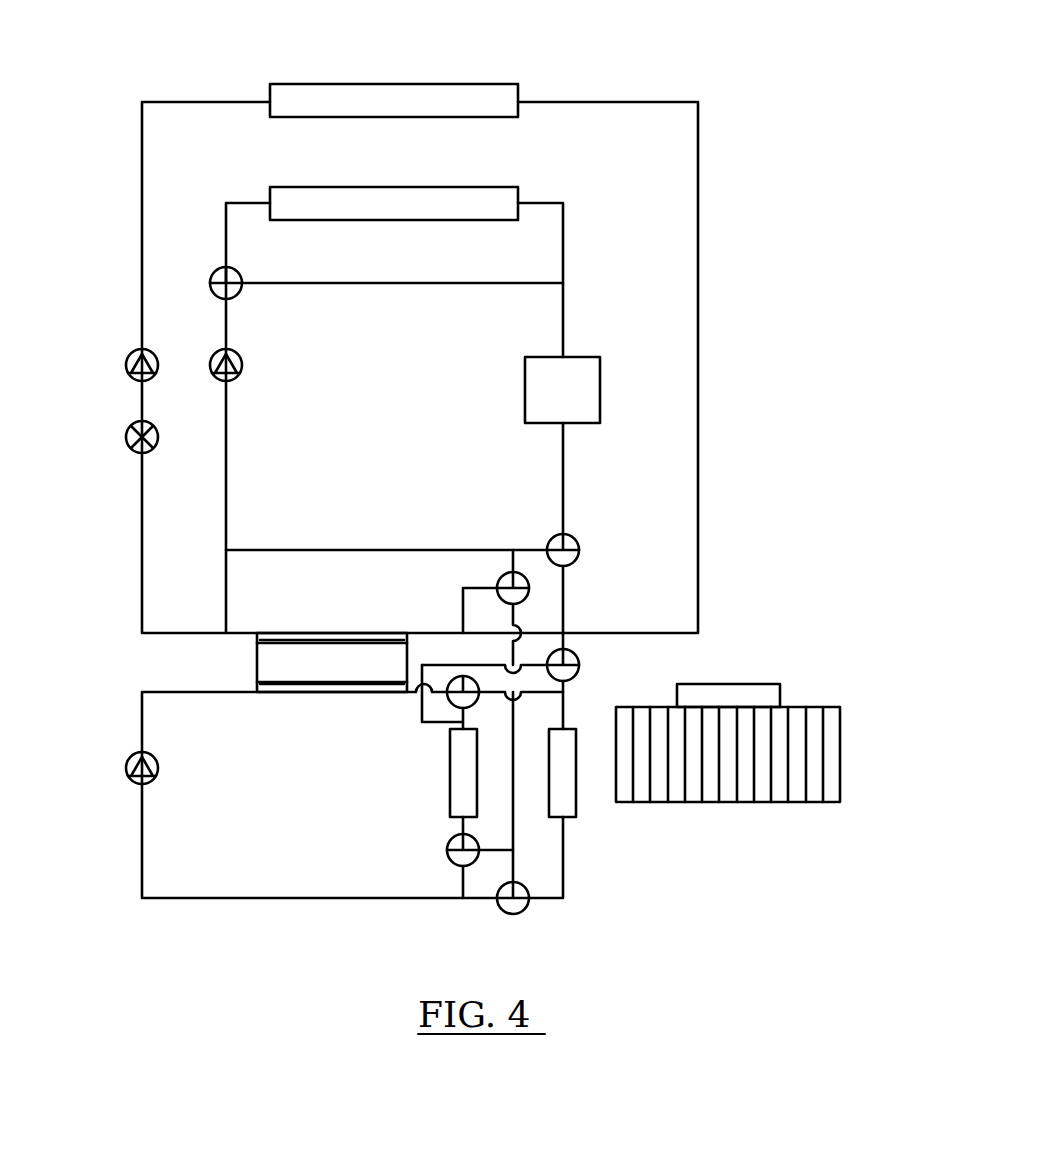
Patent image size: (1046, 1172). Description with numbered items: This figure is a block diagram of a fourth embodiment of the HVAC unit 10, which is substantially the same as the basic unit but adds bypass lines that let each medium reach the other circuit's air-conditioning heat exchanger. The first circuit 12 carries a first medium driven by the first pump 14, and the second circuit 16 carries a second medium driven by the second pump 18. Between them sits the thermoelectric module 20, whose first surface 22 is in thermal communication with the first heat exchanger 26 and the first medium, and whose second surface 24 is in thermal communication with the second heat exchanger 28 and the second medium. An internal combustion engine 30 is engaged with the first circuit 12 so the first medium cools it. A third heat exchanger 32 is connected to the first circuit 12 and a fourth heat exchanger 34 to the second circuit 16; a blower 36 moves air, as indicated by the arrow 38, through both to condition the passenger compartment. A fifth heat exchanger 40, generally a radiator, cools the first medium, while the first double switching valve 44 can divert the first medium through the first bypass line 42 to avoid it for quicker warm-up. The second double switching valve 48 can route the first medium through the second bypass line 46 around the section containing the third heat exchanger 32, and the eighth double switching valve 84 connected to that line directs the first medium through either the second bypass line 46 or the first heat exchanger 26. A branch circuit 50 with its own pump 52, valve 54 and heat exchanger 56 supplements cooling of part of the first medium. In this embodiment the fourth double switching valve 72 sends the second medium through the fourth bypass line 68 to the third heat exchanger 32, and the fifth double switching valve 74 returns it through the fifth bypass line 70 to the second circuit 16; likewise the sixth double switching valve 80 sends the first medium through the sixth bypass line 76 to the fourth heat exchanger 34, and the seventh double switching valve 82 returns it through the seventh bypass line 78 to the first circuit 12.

The HVAC unit 10 is at (665, 43).
The first circuit 12 is at (227, 478).
The first pump 14 is at (242, 365).
The second circuit 16 is at (142, 712).
The second pump 18 is at (126, 768).
The thermoelectric module 20 is at (257, 668).
The first surface 22 is at (368, 638).
The second surface 24 is at (345, 690).
The first heat exchanger 26 is at (305, 638).
The second heat exchanger 28 is at (305, 686).
The internal combustion engine 30 is at (600, 385).
The third heat exchanger 32 is at (578, 738).
The fourth heat exchanger 34 is at (450, 790).
The blower 36 is at (780, 697).
The arrow 38 is at (583, 768).
The fifth heat exchanger 40 is at (460, 187).
The first bypass line 42 is at (400, 283).
The first double switching valve 44 is at (212, 278).
The second bypass line 46 is at (388, 548).
The second double switching valve 48 is at (575, 545).
The branch circuit 50 is at (142, 295).
The pump 52 is at (126, 365).
The valve 54 is at (126, 437).
The heat exchanger 56 is at (340, 84).
The fourth bypass line 68 is at (545, 690).
The fifth bypass line 70 is at (477, 898).
The fourth double switching valve 72 is at (578, 663).
The fifth double switching valve 74 is at (528, 905).
The sixth bypass line 76 is at (537, 667).
The seventh bypass line 78 is at (492, 852).
The sixth double switching valve 80 is at (455, 706).
The seventh double switching valve 82 is at (447, 850).
The eighth double switching valve 84 is at (500, 585).